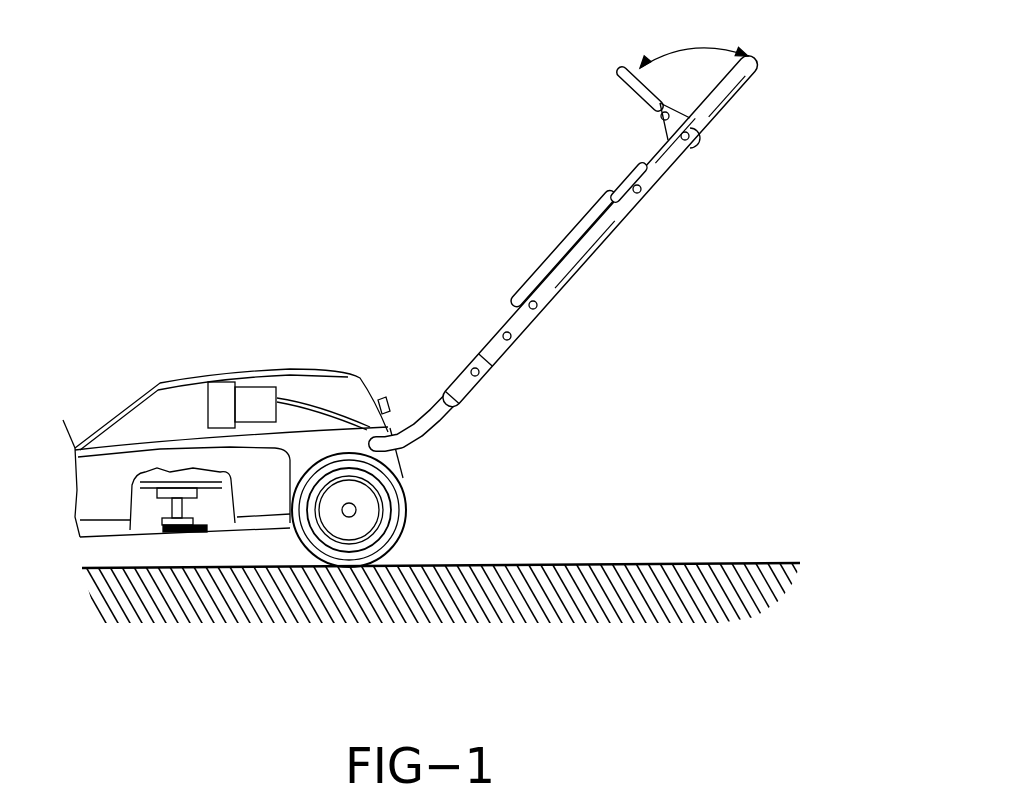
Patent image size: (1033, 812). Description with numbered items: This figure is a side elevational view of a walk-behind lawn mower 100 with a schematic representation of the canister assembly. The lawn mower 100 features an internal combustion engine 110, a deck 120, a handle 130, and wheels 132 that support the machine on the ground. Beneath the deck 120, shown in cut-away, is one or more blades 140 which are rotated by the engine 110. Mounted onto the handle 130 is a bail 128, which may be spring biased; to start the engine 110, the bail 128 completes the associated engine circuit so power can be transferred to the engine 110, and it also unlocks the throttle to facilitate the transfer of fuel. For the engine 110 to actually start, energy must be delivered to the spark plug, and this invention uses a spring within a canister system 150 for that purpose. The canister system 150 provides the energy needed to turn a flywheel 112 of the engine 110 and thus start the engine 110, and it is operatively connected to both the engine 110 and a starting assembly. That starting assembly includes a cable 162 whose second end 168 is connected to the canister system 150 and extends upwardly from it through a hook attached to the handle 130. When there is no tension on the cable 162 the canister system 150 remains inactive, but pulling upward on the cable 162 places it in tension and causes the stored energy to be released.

The lawn mower 100 is at (348, 259).
The internal combustion engine 110 is at (210, 369).
The flywheel 112 is at (210, 423).
The deck 120 is at (90, 433).
The bail 128 is at (622, 69).
The handle 130 is at (765, 63).
The wheels 132 is at (400, 520).
The blades 140 is at (207, 530).
The canister system 150 is at (263, 373).
The cable 162 is at (527, 258).
The second end of cable 168 is at (303, 381).